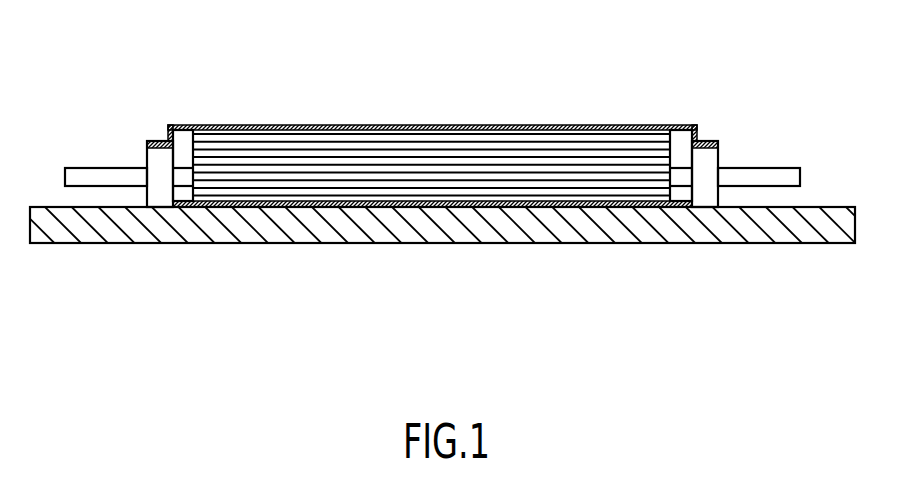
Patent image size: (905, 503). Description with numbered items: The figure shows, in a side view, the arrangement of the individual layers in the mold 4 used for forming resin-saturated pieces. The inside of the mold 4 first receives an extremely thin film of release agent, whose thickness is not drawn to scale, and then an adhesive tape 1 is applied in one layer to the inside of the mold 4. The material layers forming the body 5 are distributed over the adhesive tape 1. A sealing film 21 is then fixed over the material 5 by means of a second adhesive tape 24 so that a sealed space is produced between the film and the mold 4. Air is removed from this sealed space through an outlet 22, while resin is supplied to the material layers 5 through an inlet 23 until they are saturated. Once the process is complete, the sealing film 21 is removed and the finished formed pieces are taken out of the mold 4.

The adhesive tape 1 is at (581, 232).
The mold 4 is at (708, 233).
The material layers forming the body 5 is at (558, 160).
The sealing film 21 is at (675, 128).
The outlet 22 is at (747, 178).
The inlet 23 is at (113, 177).
The second adhesive tape 24 is at (158, 186).